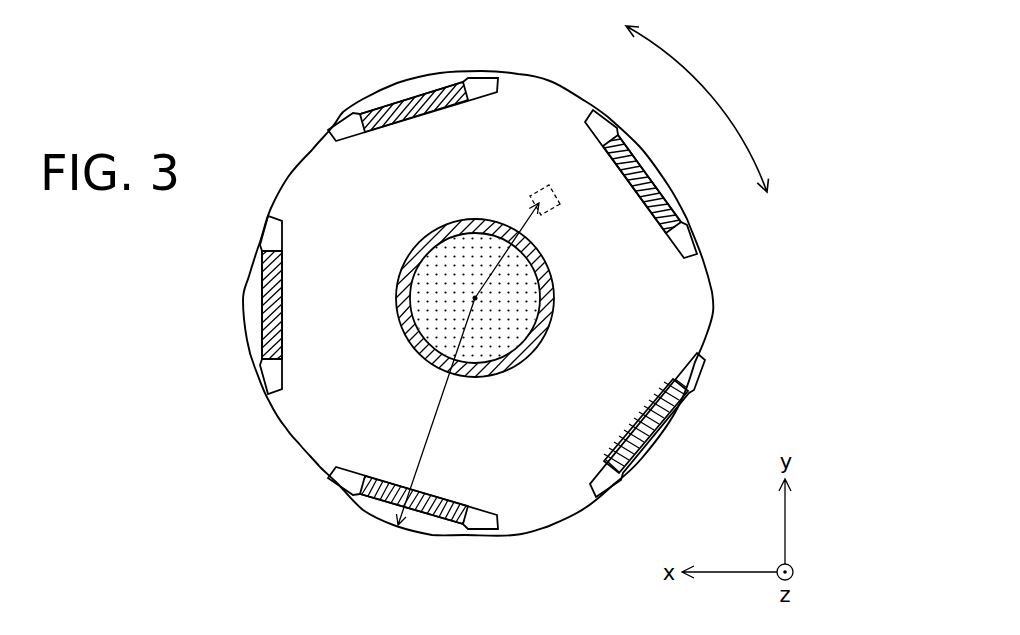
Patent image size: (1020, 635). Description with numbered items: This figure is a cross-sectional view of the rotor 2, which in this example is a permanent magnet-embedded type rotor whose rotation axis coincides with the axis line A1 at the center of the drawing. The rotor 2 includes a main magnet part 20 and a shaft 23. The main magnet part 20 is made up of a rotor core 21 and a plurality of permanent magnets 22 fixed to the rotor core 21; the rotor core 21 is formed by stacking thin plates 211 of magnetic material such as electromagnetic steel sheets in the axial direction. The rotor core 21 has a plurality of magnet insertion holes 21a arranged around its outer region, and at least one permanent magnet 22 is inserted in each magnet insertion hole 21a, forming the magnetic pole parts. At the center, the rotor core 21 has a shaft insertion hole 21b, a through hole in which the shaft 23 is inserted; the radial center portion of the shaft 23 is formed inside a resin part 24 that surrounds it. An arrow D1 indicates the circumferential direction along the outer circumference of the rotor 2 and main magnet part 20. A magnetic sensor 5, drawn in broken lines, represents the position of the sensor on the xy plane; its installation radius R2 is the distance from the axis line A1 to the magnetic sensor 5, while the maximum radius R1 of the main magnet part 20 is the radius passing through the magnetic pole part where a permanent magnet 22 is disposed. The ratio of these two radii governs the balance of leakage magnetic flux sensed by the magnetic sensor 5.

The rotor 2 is at (208, 116).
The main magnet part 20 is at (712, 279).
The rotor core 21 is at (692, 323).
The magnet insertion hole 21a is at (409, 92).
The shaft insertion hole 21b is at (519, 368).
The thin plate 211 is at (537, 105).
The permanent magnet 22 is at (411, 117).
The shaft 23 is at (437, 318).
The resin part 24 is at (415, 252).
The magnetic sensor 5 is at (528, 183).
The axis line A1 is at (478, 298).
The maximum radius R1 is at (437, 411).
The installation radius R2 is at (507, 239).
The circumferential direction arrow D1 is at (697, 109).